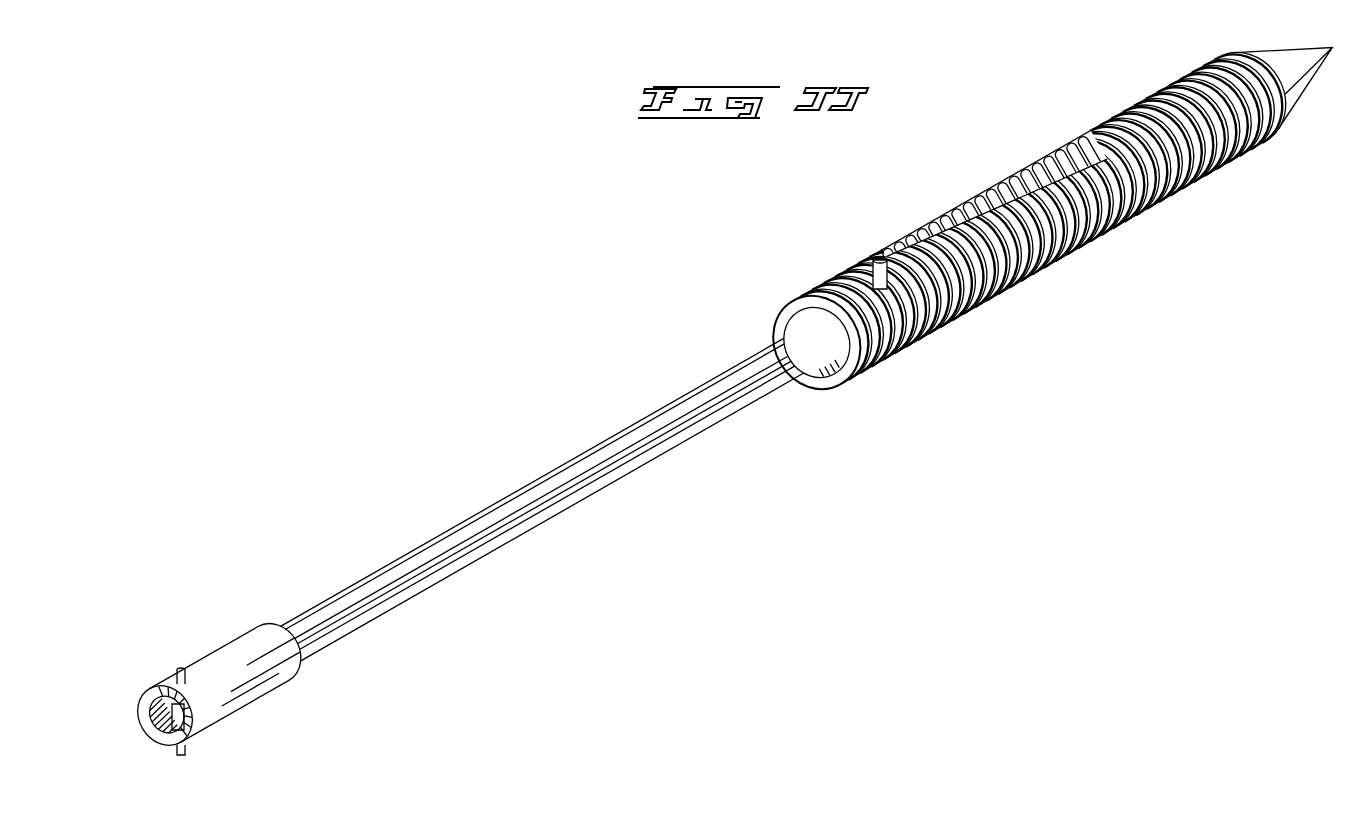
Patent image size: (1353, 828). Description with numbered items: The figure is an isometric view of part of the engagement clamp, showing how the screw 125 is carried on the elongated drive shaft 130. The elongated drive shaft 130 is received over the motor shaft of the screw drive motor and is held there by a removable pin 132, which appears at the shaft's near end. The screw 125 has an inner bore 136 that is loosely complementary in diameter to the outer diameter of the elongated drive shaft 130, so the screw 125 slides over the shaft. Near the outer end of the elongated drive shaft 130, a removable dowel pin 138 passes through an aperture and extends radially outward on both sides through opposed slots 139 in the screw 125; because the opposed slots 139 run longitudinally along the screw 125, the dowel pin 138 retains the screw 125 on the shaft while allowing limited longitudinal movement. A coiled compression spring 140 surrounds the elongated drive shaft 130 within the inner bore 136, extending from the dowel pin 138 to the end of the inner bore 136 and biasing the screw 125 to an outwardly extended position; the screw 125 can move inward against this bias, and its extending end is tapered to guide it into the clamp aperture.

The screw 125 is at (1170, 170).
The elongated drive shaft 130 is at (693, 390).
The removable pin 132 is at (185, 758).
The inner bore 136 is at (822, 375).
The removable dowel pin 138 is at (879, 257).
The opposed slots 139 is at (967, 207).
The coiled compression spring 140 is at (938, 245).